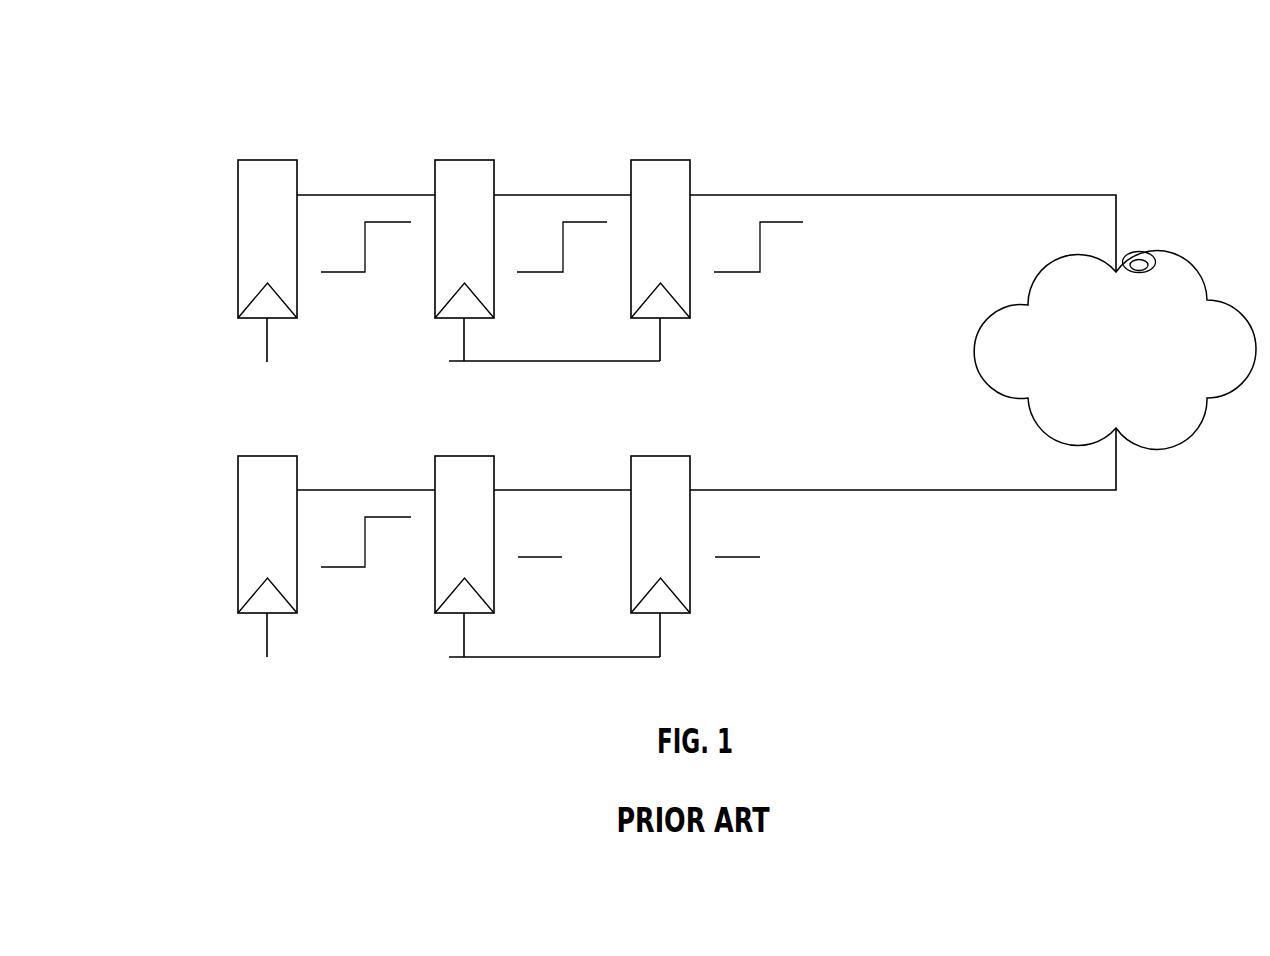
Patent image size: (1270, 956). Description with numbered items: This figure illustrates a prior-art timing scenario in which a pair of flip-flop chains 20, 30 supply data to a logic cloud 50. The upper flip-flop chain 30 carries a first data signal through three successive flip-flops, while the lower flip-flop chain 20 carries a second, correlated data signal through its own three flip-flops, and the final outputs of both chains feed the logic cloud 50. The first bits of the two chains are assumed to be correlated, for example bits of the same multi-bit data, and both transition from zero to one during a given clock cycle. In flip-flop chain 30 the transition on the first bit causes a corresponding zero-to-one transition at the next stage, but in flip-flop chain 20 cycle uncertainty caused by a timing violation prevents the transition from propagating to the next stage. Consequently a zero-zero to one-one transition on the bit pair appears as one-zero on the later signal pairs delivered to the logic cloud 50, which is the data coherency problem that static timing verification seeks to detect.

The flip-flop chain 30 is at (238, 160).
The flip-flop chain 20 is at (238, 613).
The logic cloud 50 is at (1158, 260).